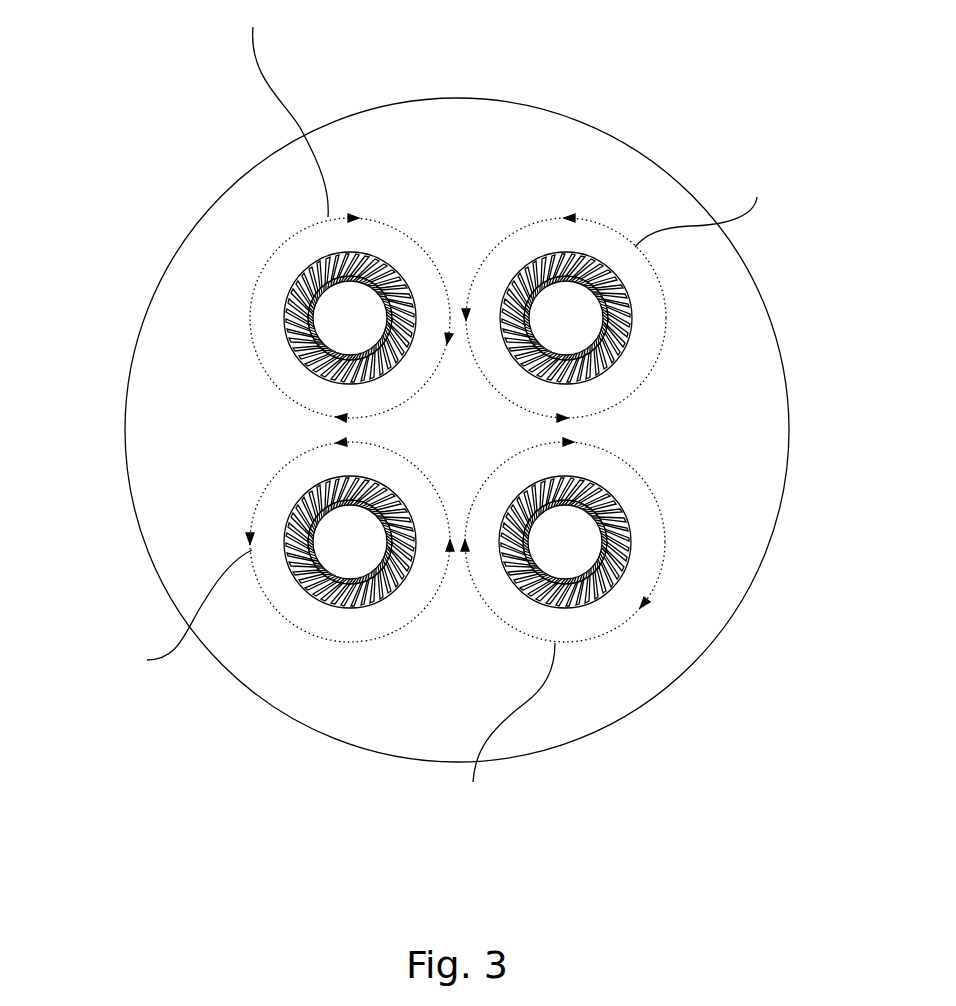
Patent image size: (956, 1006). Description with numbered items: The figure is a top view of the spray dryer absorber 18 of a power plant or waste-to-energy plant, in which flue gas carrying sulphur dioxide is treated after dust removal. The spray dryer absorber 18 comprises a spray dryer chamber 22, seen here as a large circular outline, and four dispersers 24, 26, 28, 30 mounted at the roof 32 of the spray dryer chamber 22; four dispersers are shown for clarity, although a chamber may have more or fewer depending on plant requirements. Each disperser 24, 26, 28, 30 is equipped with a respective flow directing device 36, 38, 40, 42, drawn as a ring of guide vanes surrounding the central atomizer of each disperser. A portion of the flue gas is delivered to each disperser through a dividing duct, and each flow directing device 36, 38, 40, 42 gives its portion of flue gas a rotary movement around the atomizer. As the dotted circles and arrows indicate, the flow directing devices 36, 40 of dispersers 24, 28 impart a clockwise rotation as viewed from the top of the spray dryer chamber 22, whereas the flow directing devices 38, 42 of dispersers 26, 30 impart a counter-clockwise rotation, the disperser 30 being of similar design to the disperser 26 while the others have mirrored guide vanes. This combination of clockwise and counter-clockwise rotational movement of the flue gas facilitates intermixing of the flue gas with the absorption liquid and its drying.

The spray dryer absorber 18 is at (228, 132).
The spray dryer chamber 22 is at (460, 96).
The disperser 24 is at (565, 542).
The disperser 26 is at (350, 542).
The disperser 28 is at (350, 318).
The disperser 30 is at (567, 317).
The roof 32 is at (187, 350).
The flow directing device 36 is at (602, 597).
The flow directing device 38 is at (283, 562).
The flow directing device 40 is at (392, 262).
The flow directing device 42 is at (607, 265).